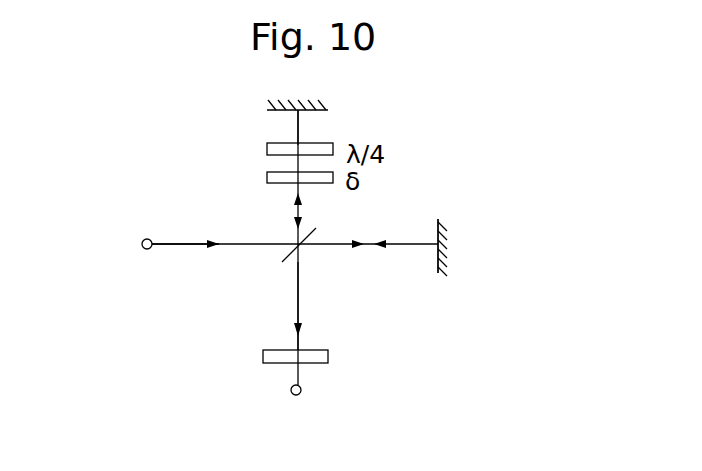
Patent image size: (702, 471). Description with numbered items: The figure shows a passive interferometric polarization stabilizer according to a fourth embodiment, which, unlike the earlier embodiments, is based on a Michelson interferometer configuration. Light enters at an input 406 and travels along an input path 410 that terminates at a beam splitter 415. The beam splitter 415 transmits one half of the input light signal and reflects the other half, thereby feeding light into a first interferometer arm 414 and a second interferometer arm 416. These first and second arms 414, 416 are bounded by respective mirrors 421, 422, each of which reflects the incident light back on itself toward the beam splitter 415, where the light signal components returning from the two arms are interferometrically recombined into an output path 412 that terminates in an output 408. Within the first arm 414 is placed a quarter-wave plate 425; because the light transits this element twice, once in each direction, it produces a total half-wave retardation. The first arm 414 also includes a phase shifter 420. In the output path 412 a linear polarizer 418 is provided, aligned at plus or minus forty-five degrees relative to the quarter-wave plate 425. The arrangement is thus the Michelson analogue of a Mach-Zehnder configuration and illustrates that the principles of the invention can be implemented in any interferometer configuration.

The input 406 is at (147, 250).
The output 408 is at (294, 396).
The input path 410 is at (214, 250).
The output path 412 is at (299, 298).
The first interferometer arm 414 is at (298, 126).
The beam splitter 415 is at (308, 234).
The second interferometer arm 416 is at (424, 240).
The linear polarizer 418 is at (263, 355).
The phase shifter 420 is at (267, 181).
The mirror 421 is at (328, 111).
The mirror 422 is at (441, 276).
The quarter-wave plate 425 is at (267, 150).